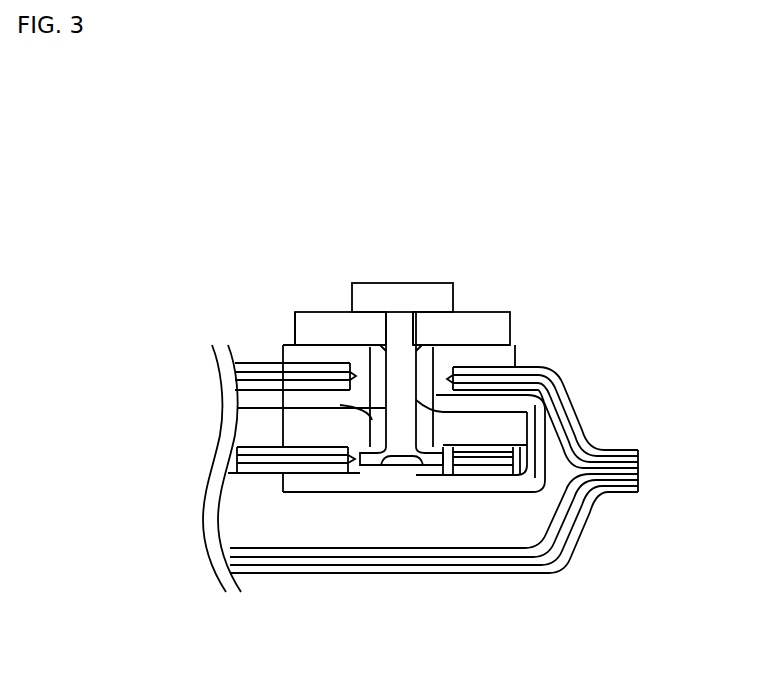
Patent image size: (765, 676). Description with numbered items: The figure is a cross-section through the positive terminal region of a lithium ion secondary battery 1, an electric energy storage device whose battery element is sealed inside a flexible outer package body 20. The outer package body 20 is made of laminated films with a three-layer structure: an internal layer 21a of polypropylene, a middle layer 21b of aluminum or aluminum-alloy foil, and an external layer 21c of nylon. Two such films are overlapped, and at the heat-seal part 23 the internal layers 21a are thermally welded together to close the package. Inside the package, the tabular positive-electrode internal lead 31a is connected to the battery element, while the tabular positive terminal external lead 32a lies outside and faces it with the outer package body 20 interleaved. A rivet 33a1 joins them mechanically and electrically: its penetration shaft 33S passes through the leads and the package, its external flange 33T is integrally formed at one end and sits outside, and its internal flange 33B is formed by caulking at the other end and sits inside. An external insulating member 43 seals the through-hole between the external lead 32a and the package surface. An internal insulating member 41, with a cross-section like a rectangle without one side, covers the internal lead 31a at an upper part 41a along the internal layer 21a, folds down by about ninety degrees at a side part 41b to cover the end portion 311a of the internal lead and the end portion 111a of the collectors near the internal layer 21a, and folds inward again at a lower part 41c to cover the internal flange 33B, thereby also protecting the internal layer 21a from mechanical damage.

The lithium ion secondary battery 1 is at (356, 84).
The outer package body 20 is at (668, 256).
The internal layer 21a is at (557, 400).
The middle layer 21b is at (578, 432).
The external layer 21c is at (590, 440).
The heat-seal part 23 is at (633, 441).
The positive-electrode internal lead 31a is at (431, 418).
The positive terminal external lead 32a is at (437, 335).
The rivet 33a1 is at (393, 197).
The internal flange 33B is at (314, 353).
The penetration shaft 33S is at (397, 330).
The external flange 33T is at (437, 336).
The internal insulating member 41 is at (275, 365).
The upper part of internal insulating member 41a is at (515, 400).
The side part of internal insulating member 41b is at (543, 470).
The lower part of internal insulating member 41c is at (495, 482).
The external insulating member 43 is at (300, 400).
The end portion of collectors 111a is at (545, 455).
The end portion of internal lead 311a is at (553, 450).